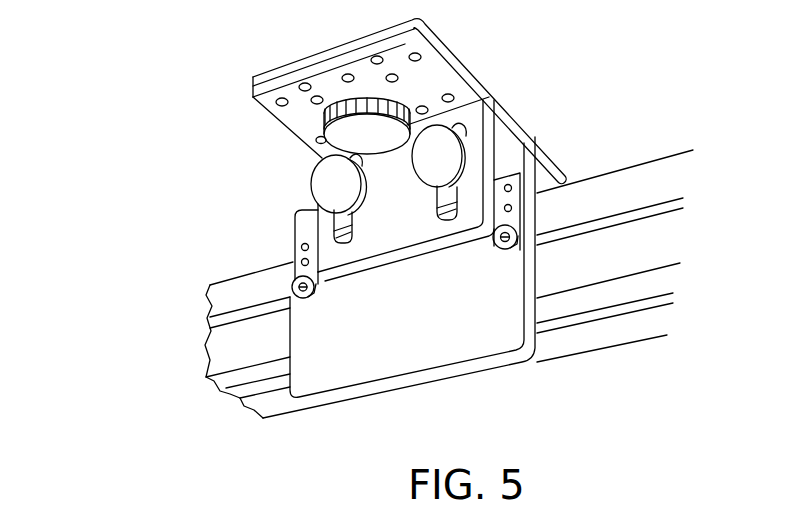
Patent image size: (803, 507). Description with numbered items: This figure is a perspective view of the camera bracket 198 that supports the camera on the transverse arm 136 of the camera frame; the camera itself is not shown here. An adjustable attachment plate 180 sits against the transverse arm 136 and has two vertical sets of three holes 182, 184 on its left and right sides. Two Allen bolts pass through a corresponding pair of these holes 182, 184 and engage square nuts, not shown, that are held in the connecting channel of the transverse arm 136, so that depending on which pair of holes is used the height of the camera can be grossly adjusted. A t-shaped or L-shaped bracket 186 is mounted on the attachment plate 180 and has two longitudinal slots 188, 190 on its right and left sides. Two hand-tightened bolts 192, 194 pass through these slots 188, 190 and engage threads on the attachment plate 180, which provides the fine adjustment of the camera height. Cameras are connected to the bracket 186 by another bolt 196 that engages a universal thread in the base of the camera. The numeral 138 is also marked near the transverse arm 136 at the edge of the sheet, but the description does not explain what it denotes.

The transverse arm 136 is at (593, 353).
The rail slot 138 is at (78, 496).
The adjustable attachment plate 180 is at (343, 378).
The holes 182 is at (296, 260).
The holes 184 is at (512, 205).
The t-shaped or L-shaped bracket 186 is at (283, 121).
The longitudinal slot 188 is at (343, 232).
The longitudinal slot 190 is at (457, 193).
The hand-tightened bolt 192 is at (315, 186).
The hand-tightened bolt 194 is at (458, 135).
The bolt 196 is at (405, 122).
The camera bracket 198 is at (146, 254).